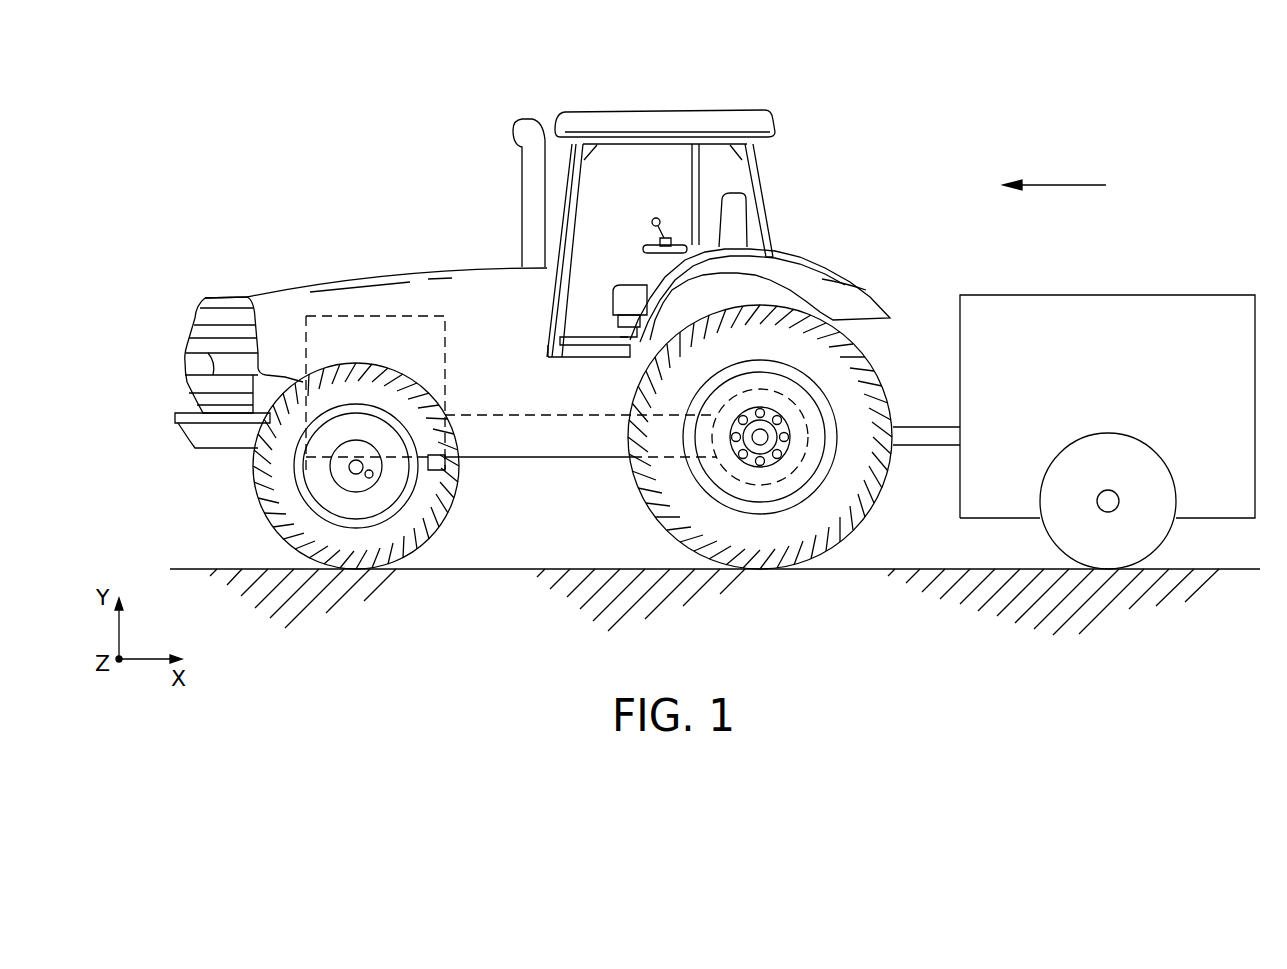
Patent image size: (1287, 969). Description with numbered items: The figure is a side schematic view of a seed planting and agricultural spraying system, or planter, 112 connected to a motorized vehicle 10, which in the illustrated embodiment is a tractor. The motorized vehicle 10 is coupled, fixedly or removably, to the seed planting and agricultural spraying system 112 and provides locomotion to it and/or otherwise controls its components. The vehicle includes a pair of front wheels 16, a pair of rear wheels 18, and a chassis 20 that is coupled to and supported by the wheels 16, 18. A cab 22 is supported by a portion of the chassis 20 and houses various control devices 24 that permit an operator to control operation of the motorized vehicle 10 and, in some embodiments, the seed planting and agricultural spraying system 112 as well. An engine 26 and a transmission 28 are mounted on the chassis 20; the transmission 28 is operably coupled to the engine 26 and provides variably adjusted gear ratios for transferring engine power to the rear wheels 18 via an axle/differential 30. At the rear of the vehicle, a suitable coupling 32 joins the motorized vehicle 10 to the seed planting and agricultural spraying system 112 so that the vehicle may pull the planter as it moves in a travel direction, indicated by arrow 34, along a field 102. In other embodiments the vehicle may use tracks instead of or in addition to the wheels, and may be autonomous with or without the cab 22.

The motorized vehicle 10 is at (375, 157).
The front wheels 16 is at (256, 488).
The rear wheels 18 is at (875, 519).
The chassis 20 is at (579, 460).
The cab 22 is at (765, 188).
The control devices 24 is at (655, 218).
The engine 26 is at (352, 316).
The transmission 28 is at (527, 418).
The axle/differential 30 is at (808, 405).
The coupling 32 is at (903, 445).
The arrow 34 is at (1072, 185).
The field 102 is at (1092, 610).
The seed planting and agricultural spraying system 112 is at (1131, 391).